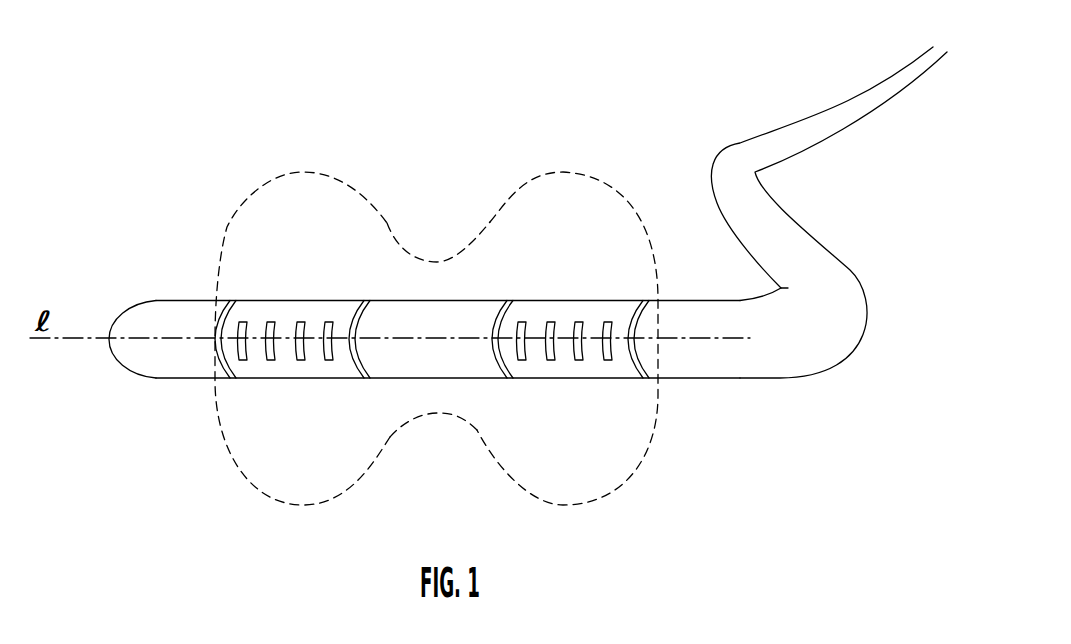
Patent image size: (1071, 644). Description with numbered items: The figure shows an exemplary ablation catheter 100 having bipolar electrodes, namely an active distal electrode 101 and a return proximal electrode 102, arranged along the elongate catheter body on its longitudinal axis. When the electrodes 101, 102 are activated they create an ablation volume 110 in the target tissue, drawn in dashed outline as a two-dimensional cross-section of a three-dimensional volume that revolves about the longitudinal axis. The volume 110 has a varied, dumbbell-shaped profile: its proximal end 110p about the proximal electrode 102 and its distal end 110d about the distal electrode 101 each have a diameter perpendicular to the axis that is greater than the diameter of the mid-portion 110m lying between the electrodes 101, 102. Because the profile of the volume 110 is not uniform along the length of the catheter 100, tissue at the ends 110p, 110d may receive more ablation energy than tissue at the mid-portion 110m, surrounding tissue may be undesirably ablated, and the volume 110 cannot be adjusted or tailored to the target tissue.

The ablation catheter 100 is at (417, 328).
The active distal electrode 101 is at (257, 332).
The return proximal electrode 102 is at (563, 332).
The ablation volume 110 is at (413, 279).
The distal end of the ablation volume 110d is at (317, 172).
The mid-portion of the ablation volume 110m is at (466, 258).
The proximal end of the ablation volume 110p is at (571, 172).